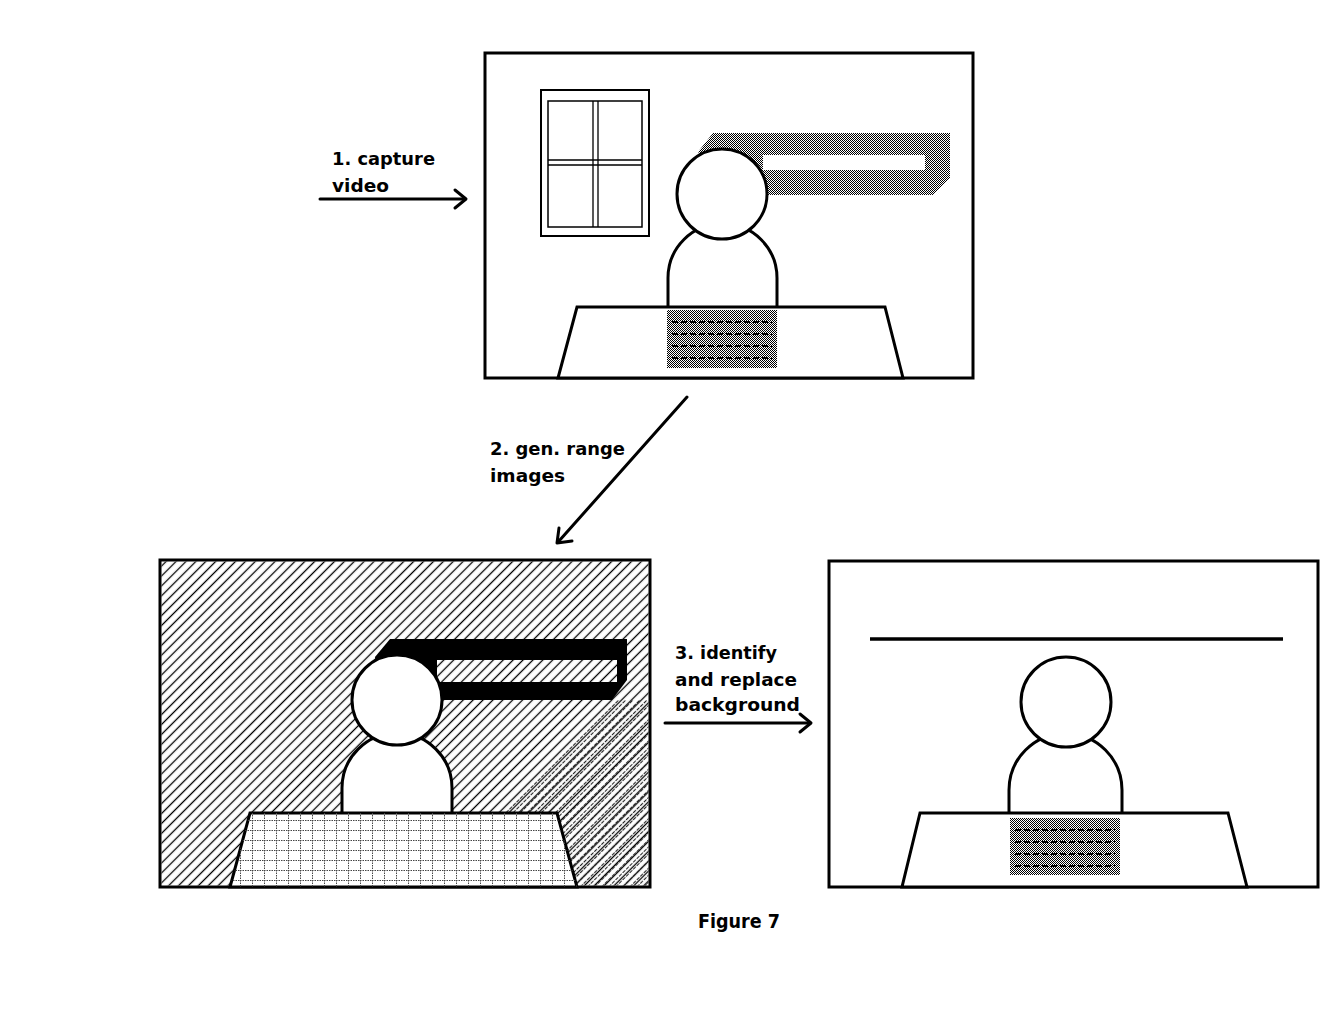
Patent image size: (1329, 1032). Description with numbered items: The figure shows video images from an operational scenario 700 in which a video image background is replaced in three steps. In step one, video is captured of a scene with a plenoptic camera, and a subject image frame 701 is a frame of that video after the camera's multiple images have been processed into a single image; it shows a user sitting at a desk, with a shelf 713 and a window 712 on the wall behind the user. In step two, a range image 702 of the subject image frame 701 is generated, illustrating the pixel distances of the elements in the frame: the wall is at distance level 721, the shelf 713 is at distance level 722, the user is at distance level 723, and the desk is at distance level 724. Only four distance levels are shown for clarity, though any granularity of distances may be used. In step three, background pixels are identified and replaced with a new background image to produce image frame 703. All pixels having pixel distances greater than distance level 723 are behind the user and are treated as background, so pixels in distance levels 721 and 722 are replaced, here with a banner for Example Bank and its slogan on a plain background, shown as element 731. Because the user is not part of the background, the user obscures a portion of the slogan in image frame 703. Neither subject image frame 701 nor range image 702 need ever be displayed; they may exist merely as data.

The operational scenario 700 is at (157, 82).
The subject image frame 701 is at (513, 52).
The range image 702 is at (190, 560).
The image frame 703 is at (860, 560).
The window 712 is at (541, 142).
The shelf 713 is at (893, 131).
The distance level 721 is at (405, 724).
The distance level 722 is at (501, 669).
The distance level 723 is at (397, 734).
The distance level 724 is at (403, 850).
The replacement background 731 is at (1020, 601).